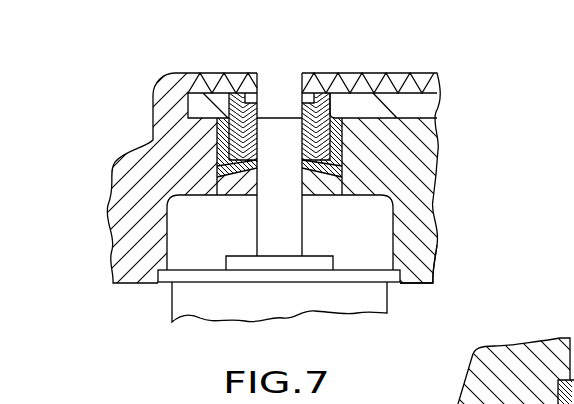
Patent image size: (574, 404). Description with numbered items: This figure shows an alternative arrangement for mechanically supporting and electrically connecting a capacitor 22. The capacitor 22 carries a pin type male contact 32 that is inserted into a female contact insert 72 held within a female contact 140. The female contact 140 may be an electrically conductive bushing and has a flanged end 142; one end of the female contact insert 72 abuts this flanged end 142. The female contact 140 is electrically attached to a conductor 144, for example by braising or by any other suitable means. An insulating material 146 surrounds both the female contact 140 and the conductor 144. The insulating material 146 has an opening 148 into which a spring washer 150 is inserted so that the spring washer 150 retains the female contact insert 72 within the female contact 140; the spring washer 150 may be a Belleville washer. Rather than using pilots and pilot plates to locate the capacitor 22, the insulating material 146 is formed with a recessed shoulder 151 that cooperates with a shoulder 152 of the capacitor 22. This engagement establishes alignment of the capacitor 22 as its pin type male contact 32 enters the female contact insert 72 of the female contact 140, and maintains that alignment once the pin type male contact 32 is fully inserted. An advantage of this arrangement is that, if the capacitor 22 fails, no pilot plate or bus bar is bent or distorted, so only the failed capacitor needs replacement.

The capacitor 22 is at (196, 312).
The pin type male contact 32 is at (293, 225).
The female contact insert 72 is at (312, 93).
The female contact 140 is at (343, 128).
The flanged end 142 is at (250, 92).
The conductor 144 is at (193, 104).
The insulating material 146 is at (143, 179).
The opening 148 is at (245, 199).
The spring washer 150 is at (320, 167).
The recessed shoulder 151 is at (437, 268).
The shoulder 152 is at (163, 285).